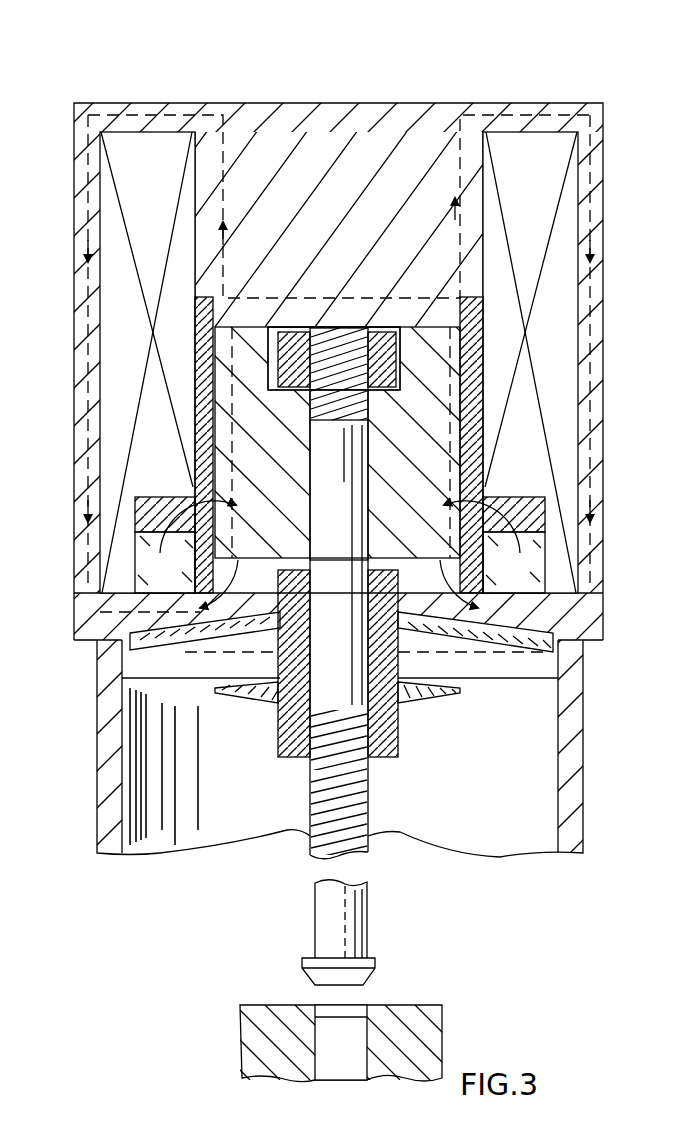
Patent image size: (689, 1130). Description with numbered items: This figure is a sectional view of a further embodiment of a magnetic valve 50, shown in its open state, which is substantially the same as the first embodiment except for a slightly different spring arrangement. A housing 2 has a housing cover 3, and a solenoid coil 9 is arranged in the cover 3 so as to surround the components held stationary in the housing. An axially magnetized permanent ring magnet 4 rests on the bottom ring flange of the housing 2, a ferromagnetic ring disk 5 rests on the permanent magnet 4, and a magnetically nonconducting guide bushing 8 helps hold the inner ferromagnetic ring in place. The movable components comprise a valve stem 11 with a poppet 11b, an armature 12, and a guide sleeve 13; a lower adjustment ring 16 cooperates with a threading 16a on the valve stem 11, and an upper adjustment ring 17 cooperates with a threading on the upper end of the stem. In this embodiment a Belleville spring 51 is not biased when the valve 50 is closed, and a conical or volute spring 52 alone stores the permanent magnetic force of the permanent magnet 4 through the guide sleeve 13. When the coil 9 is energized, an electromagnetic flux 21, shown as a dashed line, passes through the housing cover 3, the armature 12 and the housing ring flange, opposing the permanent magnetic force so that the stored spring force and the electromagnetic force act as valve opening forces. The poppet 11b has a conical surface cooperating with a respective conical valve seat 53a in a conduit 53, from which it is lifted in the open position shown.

The magnetic valve 50 is at (574, 70).
The housing cover 3 is at (436, 190).
The electromagnetic flux 21 is at (86, 222).
The solenoid coil 9 is at (118, 320).
The guide bushing 8 is at (202, 392).
The armature 12 is at (436, 433).
The upper adjustment ring 17 is at (450, 370).
The valve stem 11 is at (350, 458).
The ferromagnetic ring disk 5 is at (143, 497).
The permanent ring magnet 4 is at (140, 550).
The housing 2 is at (108, 730).
The Belleville spring 51 is at (555, 642).
The guide sleeve 13 is at (402, 668).
The conical or volute spring 52 is at (420, 700).
The lower adjustment ring 16 is at (378, 748).
The threading 16a is at (366, 790).
The poppet 11b is at (370, 963).
The conical valve seat 53a is at (370, 1006).
The conduit 53 is at (418, 1048).